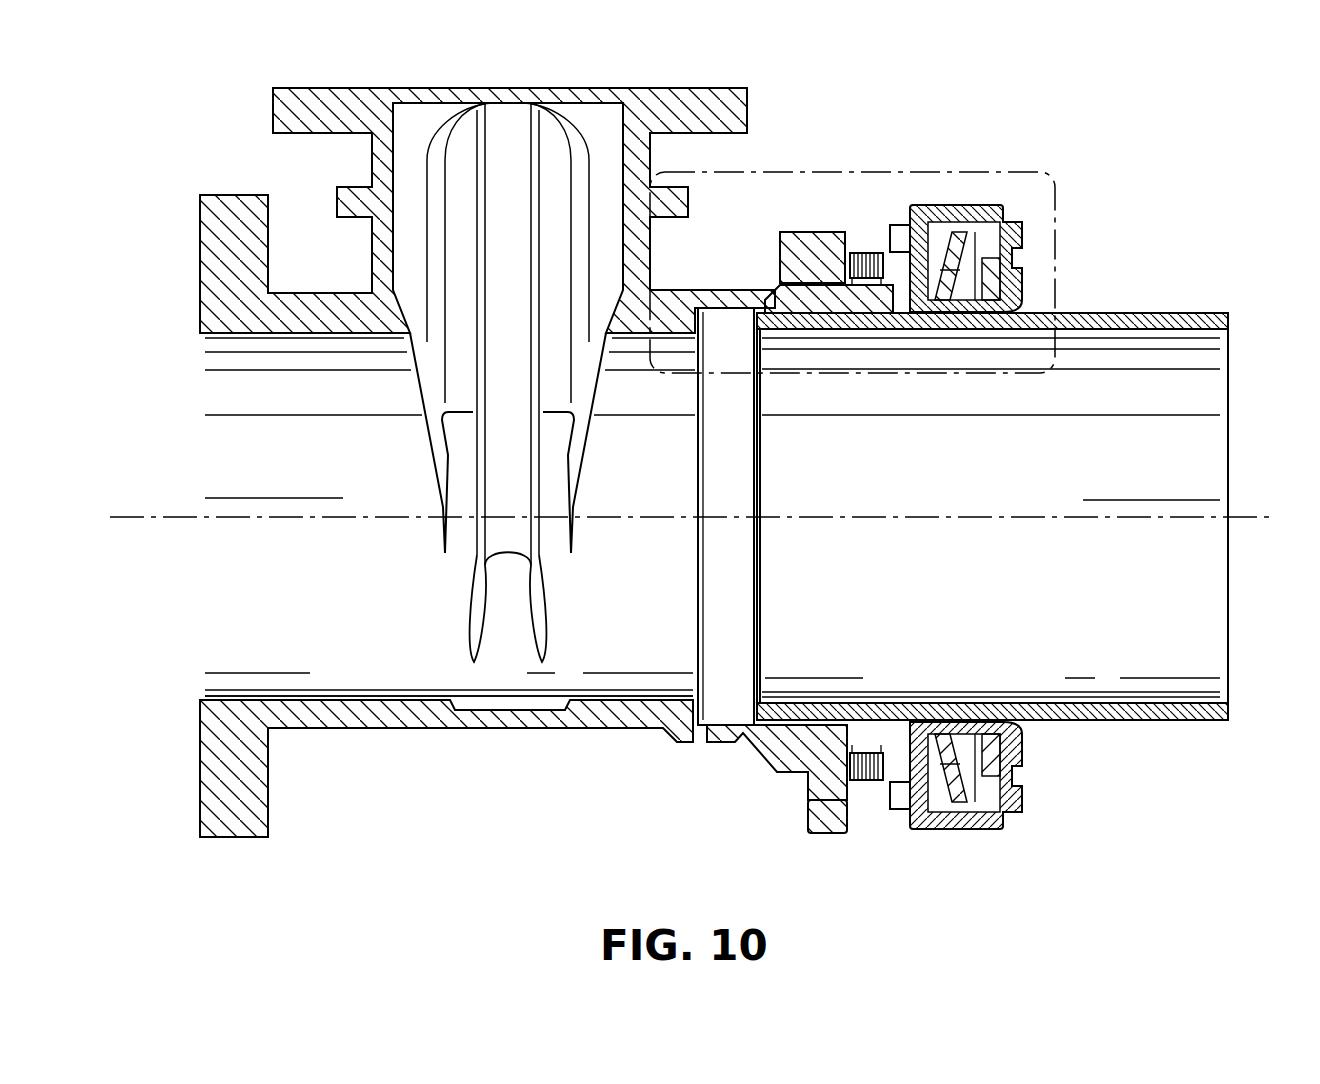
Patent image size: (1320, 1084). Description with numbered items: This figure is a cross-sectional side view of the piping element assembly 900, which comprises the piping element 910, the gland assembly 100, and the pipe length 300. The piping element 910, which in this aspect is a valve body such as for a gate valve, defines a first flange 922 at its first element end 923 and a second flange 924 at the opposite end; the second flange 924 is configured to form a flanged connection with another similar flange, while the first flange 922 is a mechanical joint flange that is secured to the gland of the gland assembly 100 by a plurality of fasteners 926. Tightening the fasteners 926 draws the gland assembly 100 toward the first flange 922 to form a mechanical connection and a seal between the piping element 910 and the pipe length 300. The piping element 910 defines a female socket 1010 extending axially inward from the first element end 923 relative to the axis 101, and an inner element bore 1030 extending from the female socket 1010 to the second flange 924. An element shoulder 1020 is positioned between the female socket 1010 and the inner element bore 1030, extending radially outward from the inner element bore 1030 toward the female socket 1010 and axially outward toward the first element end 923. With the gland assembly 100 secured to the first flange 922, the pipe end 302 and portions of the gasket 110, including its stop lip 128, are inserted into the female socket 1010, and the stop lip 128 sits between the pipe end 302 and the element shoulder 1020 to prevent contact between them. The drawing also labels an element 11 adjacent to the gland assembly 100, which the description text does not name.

The piping element assembly 900 is at (207, 78).
The piping element 910 is at (350, 100).
The second flange 924 is at (215, 228).
The inner element bore 1030 is at (380, 672).
The element shoulder 1020 is at (702, 707).
The female socket 1010 is at (720, 715).
The stop lip 128 is at (755, 695).
The pipe length 300 is at (1221, 636).
The pipe end 302 is at (762, 640).
The axis 101 is at (975, 505).
The gland assembly 100 is at (1058, 140).
The first flange 922 is at (800, 243).
The first element end 923 is at (848, 780).
The fasteners 926 is at (867, 255).
The gasket 110 is at (830, 720).
The bearing cap 11 is at (1057, 274).